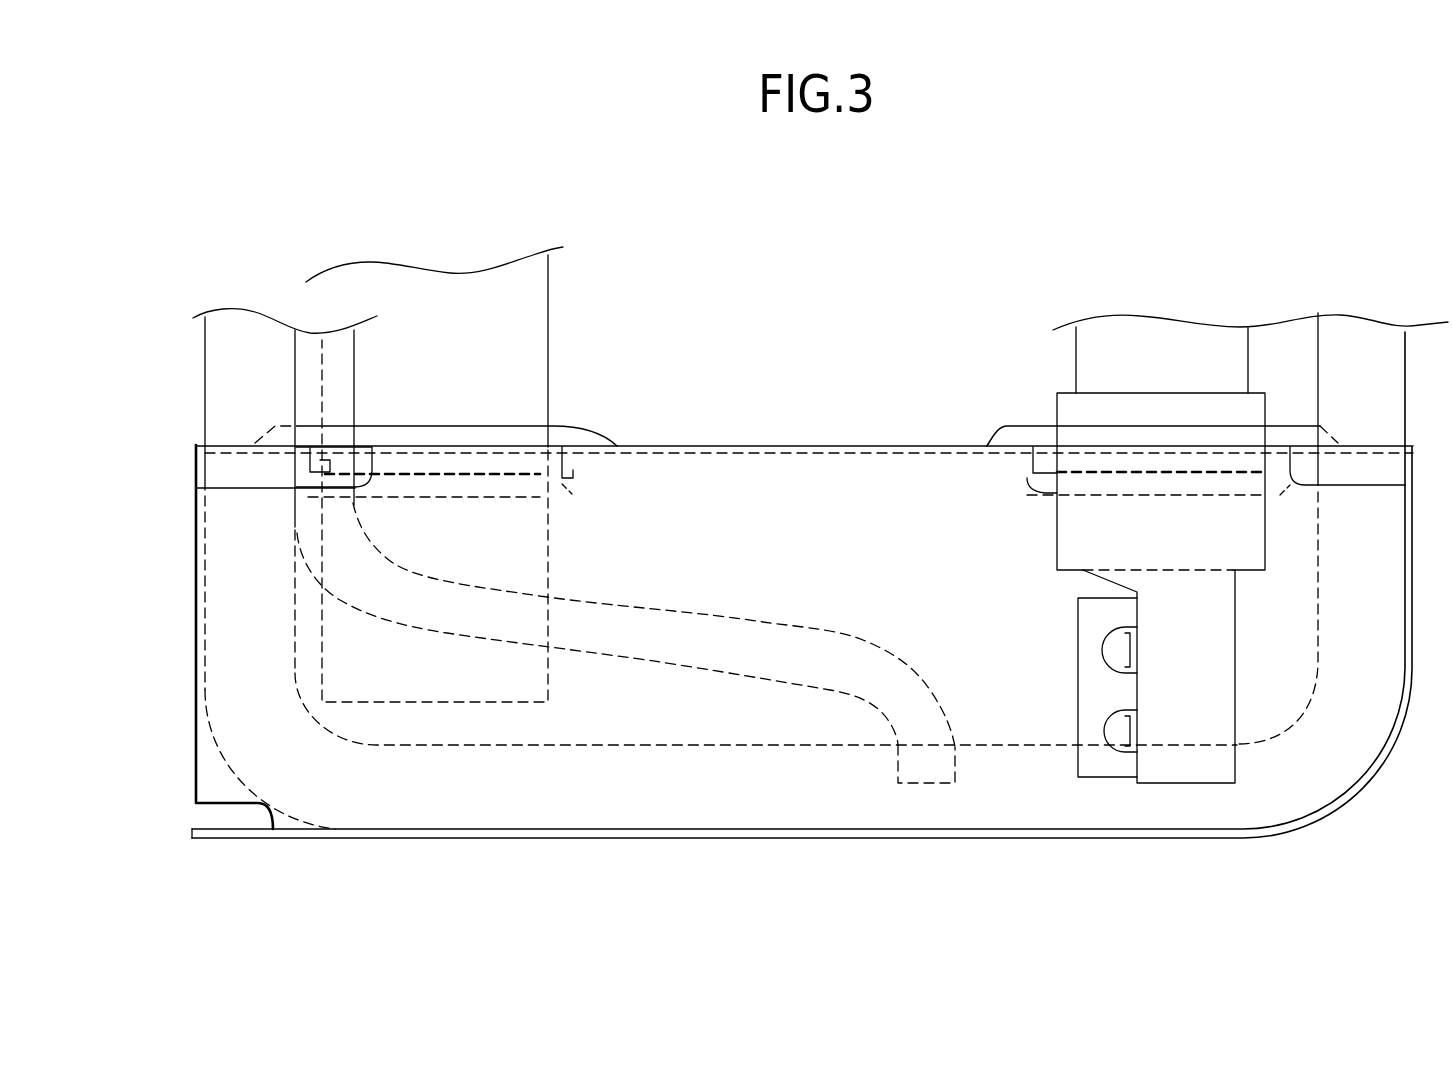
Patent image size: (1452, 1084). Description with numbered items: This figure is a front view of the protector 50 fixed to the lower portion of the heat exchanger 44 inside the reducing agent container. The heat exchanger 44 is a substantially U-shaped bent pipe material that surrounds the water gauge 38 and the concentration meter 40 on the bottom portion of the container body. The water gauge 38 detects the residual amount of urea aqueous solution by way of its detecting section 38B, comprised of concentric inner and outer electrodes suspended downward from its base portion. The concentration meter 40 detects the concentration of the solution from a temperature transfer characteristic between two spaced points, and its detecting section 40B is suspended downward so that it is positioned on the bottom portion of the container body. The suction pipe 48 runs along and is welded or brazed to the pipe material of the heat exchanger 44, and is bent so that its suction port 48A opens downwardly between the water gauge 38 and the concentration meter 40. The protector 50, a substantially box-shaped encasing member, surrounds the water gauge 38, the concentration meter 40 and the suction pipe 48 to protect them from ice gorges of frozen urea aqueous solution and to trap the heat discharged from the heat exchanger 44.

The water gauge 38 is at (557, 305).
The detecting section 38B is at (523, 535).
The concentration meter 40 is at (1152, 336).
The detecting section 40B is at (1210, 710).
The heat exchanger 44 is at (233, 401).
The suction pipe 48 is at (770, 624).
The suction port 48A is at (920, 788).
The protector 50 is at (196, 600).